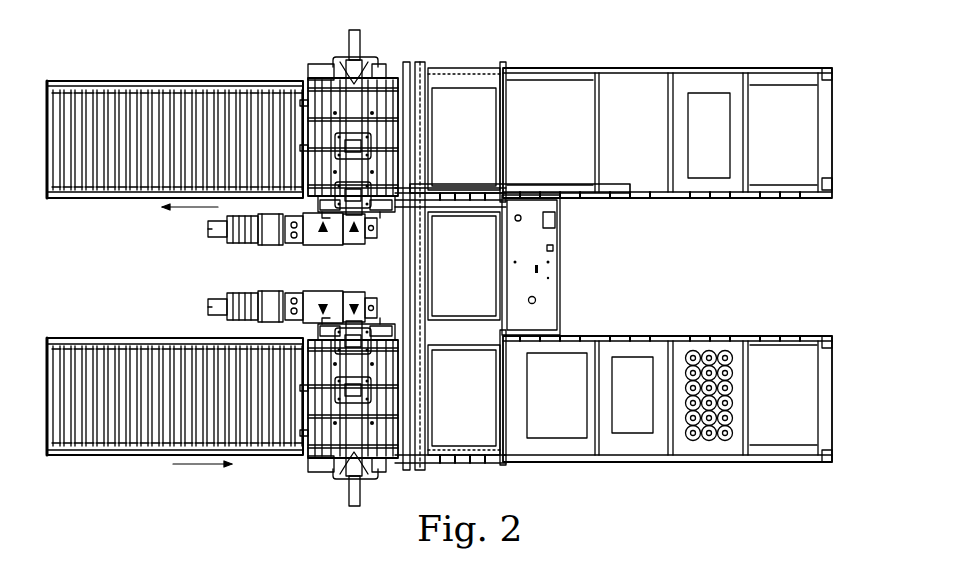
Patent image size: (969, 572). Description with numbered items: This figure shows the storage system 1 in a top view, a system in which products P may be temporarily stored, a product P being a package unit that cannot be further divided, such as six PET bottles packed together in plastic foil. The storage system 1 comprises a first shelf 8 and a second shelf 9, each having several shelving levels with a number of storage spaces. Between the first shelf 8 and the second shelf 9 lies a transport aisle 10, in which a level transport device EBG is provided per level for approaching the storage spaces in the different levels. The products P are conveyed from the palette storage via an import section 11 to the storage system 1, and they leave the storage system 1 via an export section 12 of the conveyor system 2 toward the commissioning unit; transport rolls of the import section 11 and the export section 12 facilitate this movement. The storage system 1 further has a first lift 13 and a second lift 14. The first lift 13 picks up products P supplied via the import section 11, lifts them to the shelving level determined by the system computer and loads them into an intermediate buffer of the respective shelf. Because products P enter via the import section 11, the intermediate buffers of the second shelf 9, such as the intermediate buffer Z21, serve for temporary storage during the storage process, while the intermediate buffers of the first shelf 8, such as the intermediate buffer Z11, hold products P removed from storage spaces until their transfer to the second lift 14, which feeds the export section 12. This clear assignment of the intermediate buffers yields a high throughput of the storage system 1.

The storage system 1 is at (468, 257).
The conveyor system 2 is at (175, 258).
The first shelf 8 is at (838, 125).
The second shelf 9 is at (695, 368).
The transport aisle 10 is at (642, 260).
The import section 11 is at (83, 454).
The export section 12 is at (81, 82).
The first lift 13 is at (312, 469).
The second lift 14 is at (311, 62).
The intermediate buffer Z11 is at (484, 98).
The intermediate buffer Z21 is at (510, 458).
The level transport device EBG is at (563, 272).
The product P is at (722, 352).